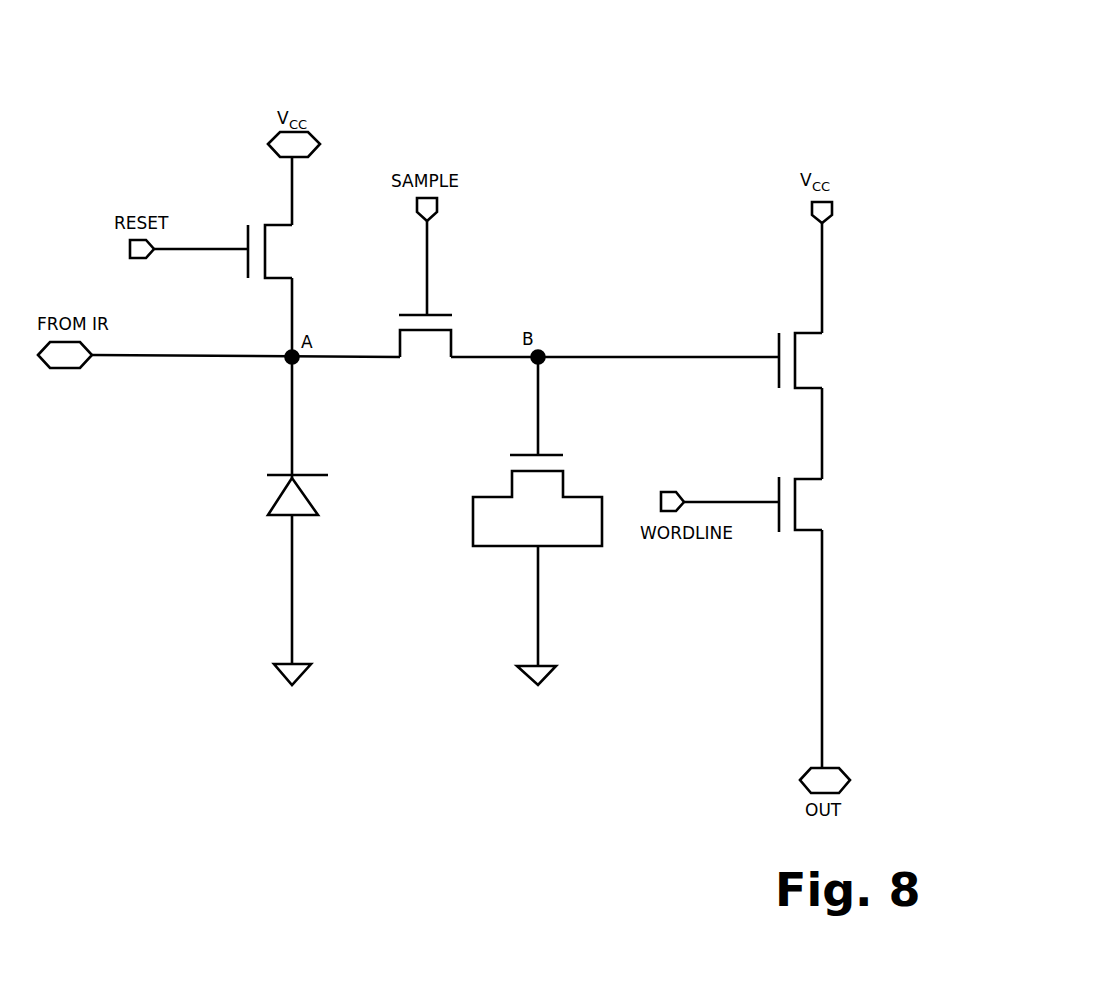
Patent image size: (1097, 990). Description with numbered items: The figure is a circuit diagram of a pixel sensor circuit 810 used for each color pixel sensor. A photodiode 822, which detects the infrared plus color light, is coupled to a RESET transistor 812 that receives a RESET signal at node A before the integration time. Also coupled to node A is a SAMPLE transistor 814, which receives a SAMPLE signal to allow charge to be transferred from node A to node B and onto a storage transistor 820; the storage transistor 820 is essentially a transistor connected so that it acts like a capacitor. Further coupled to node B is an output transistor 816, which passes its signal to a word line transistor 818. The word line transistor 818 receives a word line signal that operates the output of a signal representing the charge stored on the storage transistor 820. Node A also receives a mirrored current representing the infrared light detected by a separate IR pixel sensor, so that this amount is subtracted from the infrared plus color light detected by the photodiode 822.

The pixel sensor circuit 810 is at (828, 44).
The RESET transistor 812 is at (280, 251).
The SAMPLE transistor 814 is at (425, 337).
The output transistor 816 is at (809, 360).
The word line transistor 818 is at (809, 504).
The storage transistor 820 is at (537, 521).
The photodiode 822 is at (312, 521).